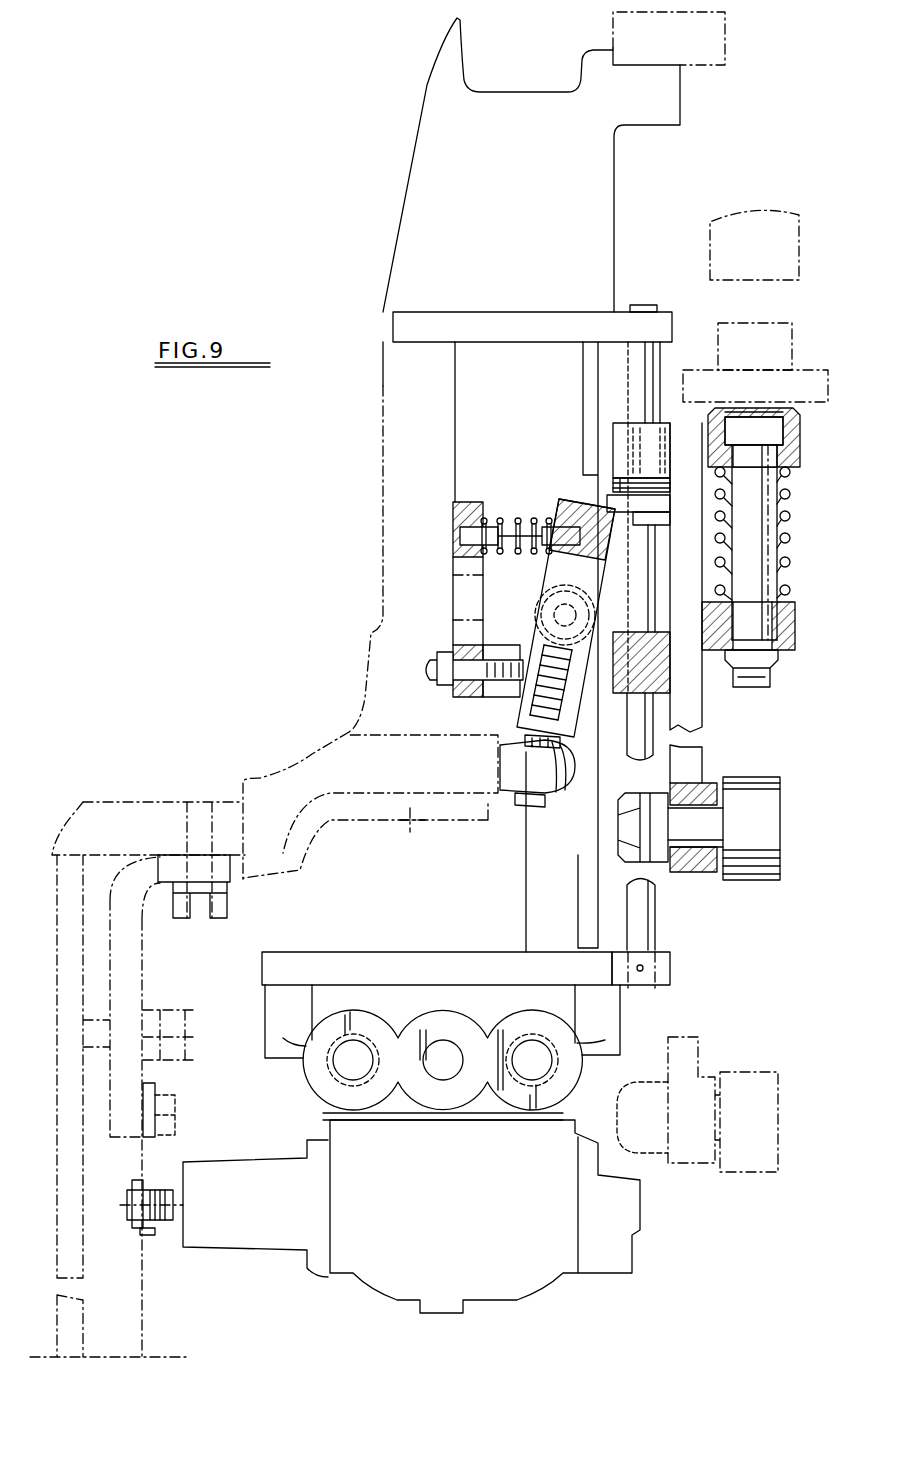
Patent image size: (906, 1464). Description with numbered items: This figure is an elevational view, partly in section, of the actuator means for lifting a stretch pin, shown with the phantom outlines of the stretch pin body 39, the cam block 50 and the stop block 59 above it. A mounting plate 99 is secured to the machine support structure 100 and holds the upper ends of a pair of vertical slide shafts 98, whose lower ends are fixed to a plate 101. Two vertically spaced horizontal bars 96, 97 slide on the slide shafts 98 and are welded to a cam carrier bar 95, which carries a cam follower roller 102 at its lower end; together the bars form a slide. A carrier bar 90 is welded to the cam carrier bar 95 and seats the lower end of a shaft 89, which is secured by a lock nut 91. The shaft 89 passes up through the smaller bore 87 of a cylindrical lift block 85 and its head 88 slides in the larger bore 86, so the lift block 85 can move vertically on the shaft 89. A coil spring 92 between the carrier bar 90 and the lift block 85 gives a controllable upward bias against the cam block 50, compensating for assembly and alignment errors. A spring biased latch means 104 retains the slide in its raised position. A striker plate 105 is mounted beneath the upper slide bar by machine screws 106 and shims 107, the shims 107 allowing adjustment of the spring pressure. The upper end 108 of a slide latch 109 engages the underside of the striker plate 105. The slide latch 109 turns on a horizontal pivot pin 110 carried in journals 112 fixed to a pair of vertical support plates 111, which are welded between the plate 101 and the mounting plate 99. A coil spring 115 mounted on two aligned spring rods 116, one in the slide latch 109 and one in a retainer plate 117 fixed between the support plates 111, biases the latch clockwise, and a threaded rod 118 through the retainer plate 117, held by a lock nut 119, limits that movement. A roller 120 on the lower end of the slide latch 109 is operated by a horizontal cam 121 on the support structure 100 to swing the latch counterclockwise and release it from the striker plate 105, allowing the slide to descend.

The support structure 100 is at (395, 238).
The mounting plate 99 is at (540, 320).
The slide shafts 98 is at (653, 302).
The stretch pin body 39 is at (778, 263).
The cylindrical block 59 is at (790, 346).
The cam block 50 is at (808, 380).
The larger bore 86 is at (738, 415).
The head 88 is at (772, 432).
The lift block 85 is at (800, 452).
The shaft 89 is at (762, 490).
The coil spring 92 is at (797, 534).
The carrier bar 90 is at (800, 626).
The lock nut 91 is at (780, 668).
The cam carrier bar 95 is at (693, 710).
The horizontal bar 96 is at (623, 435).
The shims 107 is at (633, 480).
The smaller bore 87 is at (708, 476).
The machine screws 106 is at (648, 522).
The striker plate 105 is at (610, 505).
The upper end 108 is at (568, 490).
The latch means 104 is at (493, 510).
The support plates 111 is at (480, 446).
The retainer plate 117 is at (466, 515).
The spring rods 116 is at (462, 537).
The coil spring 115 is at (515, 560).
The slide latch 109 is at (547, 585).
The pivot pin 110 is at (545, 617).
The journals 112 is at (545, 637).
The threaded rod 118 is at (421, 673).
The lock nut 119 is at (445, 686).
The horizontal bar 97 is at (633, 694).
The roller 120 is at (508, 766).
The horizontal cam 121 is at (427, 828).
The cam follower roller 102 is at (782, 780).
The plate 101 is at (426, 962).